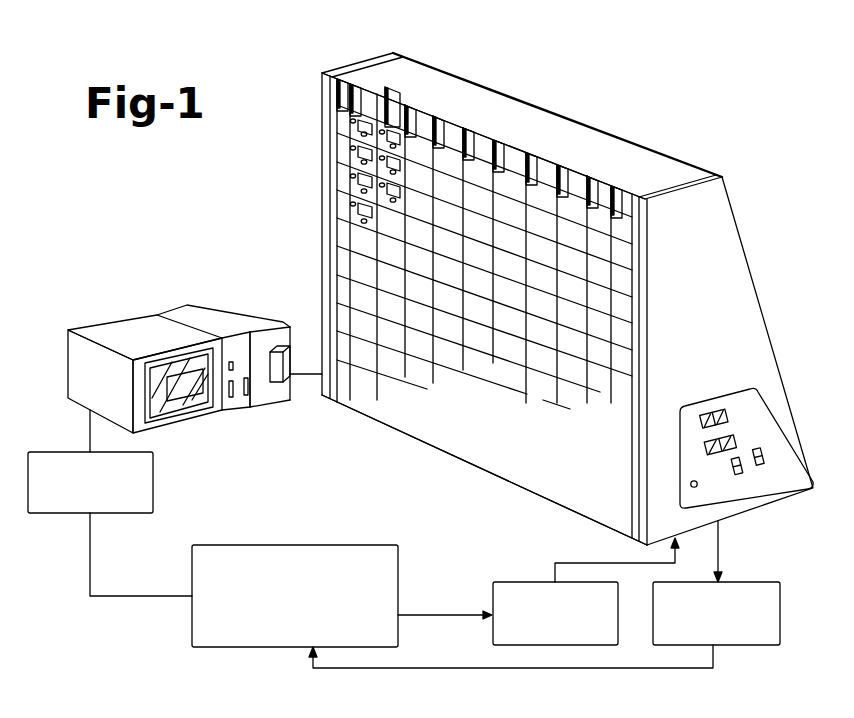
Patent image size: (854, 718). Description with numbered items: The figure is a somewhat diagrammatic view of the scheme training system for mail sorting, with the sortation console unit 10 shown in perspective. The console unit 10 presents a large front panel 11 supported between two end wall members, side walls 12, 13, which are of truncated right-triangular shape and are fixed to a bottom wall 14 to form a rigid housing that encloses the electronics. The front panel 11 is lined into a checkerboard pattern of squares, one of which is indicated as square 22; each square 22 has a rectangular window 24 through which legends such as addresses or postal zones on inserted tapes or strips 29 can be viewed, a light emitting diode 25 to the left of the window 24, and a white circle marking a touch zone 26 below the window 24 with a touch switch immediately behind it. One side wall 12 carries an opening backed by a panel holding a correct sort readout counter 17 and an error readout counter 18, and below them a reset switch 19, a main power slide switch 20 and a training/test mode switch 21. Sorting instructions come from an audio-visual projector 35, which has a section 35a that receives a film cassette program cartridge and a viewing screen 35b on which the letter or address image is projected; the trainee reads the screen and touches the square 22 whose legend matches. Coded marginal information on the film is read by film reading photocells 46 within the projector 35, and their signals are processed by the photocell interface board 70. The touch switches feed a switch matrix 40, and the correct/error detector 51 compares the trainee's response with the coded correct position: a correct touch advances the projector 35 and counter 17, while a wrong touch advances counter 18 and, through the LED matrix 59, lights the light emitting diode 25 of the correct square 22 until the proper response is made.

The sortation console unit 10 is at (683, 143).
The front panel 11 is at (340, 158).
The side wall 12 is at (332, 66).
The side wall 13 is at (707, 202).
The bottom wall 14 is at (513, 487).
The correct sort readout counter 17 is at (720, 416).
The error readout counter 18 is at (722, 447).
The reset switch 19 is at (690, 484).
The main power slide switch 20 is at (700, 502).
The training/test mode switch 21 is at (743, 470).
The square 22 is at (445, 160).
The window 24 is at (358, 120).
The light emitting diode 25 is at (353, 121).
The touch zone 26 is at (362, 222).
The tapes or strips 29 is at (397, 91).
The audio-visual projector 35 is at (118, 320).
The program cartridge receiving section 35a is at (267, 396).
The viewing screen 35b is at (175, 408).
The switch matrix 40 is at (763, 647).
The film reading photocells 46 is at (14, 707).
The correct/error detector 51 is at (293, 545).
The LED matrix 59 is at (509, 588).
The photocell interface board 70 is at (58, 516).